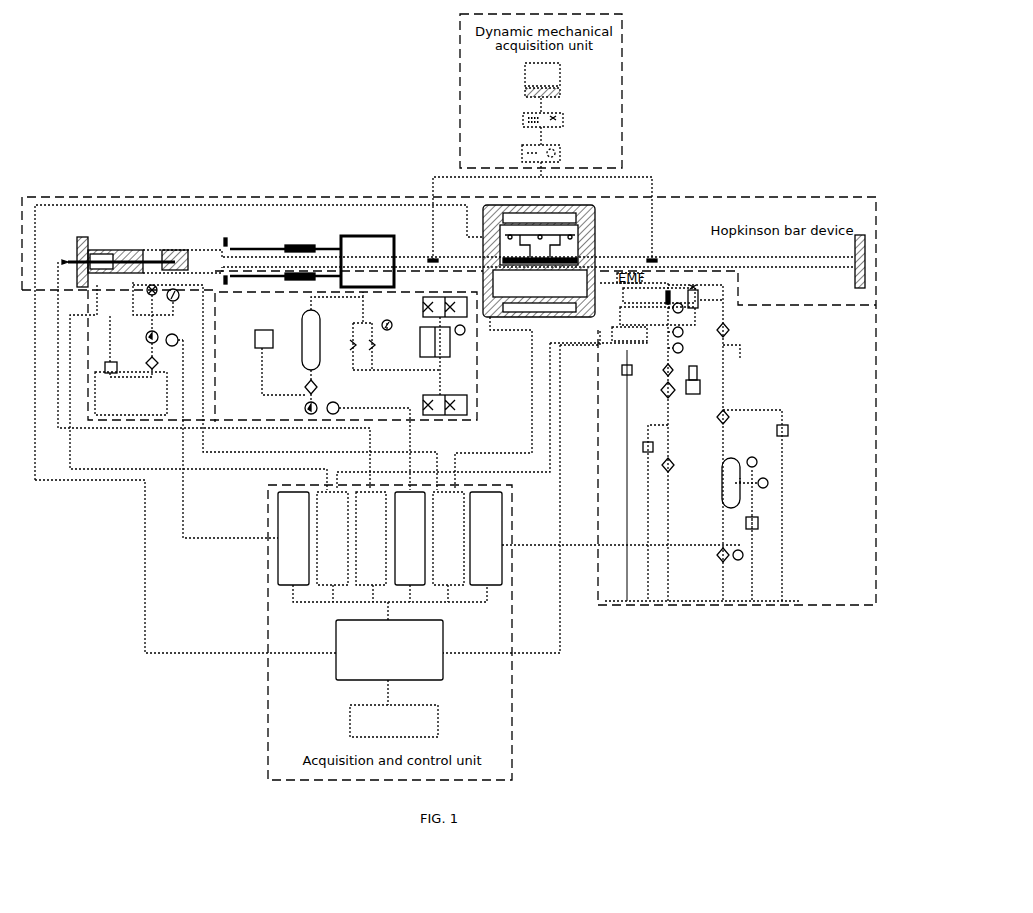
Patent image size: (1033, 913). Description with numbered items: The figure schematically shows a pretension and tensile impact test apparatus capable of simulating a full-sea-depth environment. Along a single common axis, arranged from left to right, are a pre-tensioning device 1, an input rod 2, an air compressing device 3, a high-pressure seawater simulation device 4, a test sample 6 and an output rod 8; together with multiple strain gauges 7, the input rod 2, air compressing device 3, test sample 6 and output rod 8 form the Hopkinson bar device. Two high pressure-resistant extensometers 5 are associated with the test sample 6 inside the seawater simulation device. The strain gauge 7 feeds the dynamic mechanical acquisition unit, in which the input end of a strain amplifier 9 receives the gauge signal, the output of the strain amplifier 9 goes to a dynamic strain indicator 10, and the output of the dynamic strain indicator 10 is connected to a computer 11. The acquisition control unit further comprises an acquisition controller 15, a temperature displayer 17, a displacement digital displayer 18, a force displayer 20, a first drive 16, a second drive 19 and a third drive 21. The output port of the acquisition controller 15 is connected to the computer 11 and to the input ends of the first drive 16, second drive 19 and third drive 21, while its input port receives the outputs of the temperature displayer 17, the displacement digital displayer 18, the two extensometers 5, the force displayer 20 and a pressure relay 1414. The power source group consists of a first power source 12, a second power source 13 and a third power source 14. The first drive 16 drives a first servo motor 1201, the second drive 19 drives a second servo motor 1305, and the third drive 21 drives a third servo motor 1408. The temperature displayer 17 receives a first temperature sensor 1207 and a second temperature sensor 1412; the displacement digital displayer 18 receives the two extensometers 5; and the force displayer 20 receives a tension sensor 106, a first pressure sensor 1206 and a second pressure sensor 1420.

The pre-tensioning device 1 is at (125, 248).
The input rod 2 is at (213, 248).
The air compressing device 3 is at (315, 248).
The high-pressure seawater simulation device 4 is at (500, 207).
The high pressure-resistant extensometer 5 is at (532, 213).
The test sample 6 is at (580, 255).
The strain gauge 7 is at (655, 258).
The output rod 8 is at (690, 256).
The strain amplifier 9 is at (520, 153).
The dynamic strain indicator 10 is at (522, 118).
The computer 11 is at (562, 73).
The first power source 12 is at (253, 386).
The second power source 13 is at (354, 353).
The third power source 14 is at (735, 442).
The acquisition controller 15 is at (390, 645).
The first drive 16 is at (293, 547).
The temperature display 17 is at (332, 547).
The displacement digital display 18 is at (370, 547).
The second drive 19 is at (409, 547).
The force display 20 is at (447, 547).
The third drive 21 is at (485, 547).
The tension sensor 106 is at (172, 250).
The first servo motor 1201 is at (230, 439).
The first pressure sensor 1206 is at (158, 300).
The first temperature sensor 1207 is at (127, 293).
The second servo motor 1305 is at (374, 449).
The third servo motor 1408 is at (621, 537).
The second temperature sensor 1412 is at (659, 295).
The pressure relay 1414 is at (629, 335).
The second pressure sensor 1420 is at (657, 316).